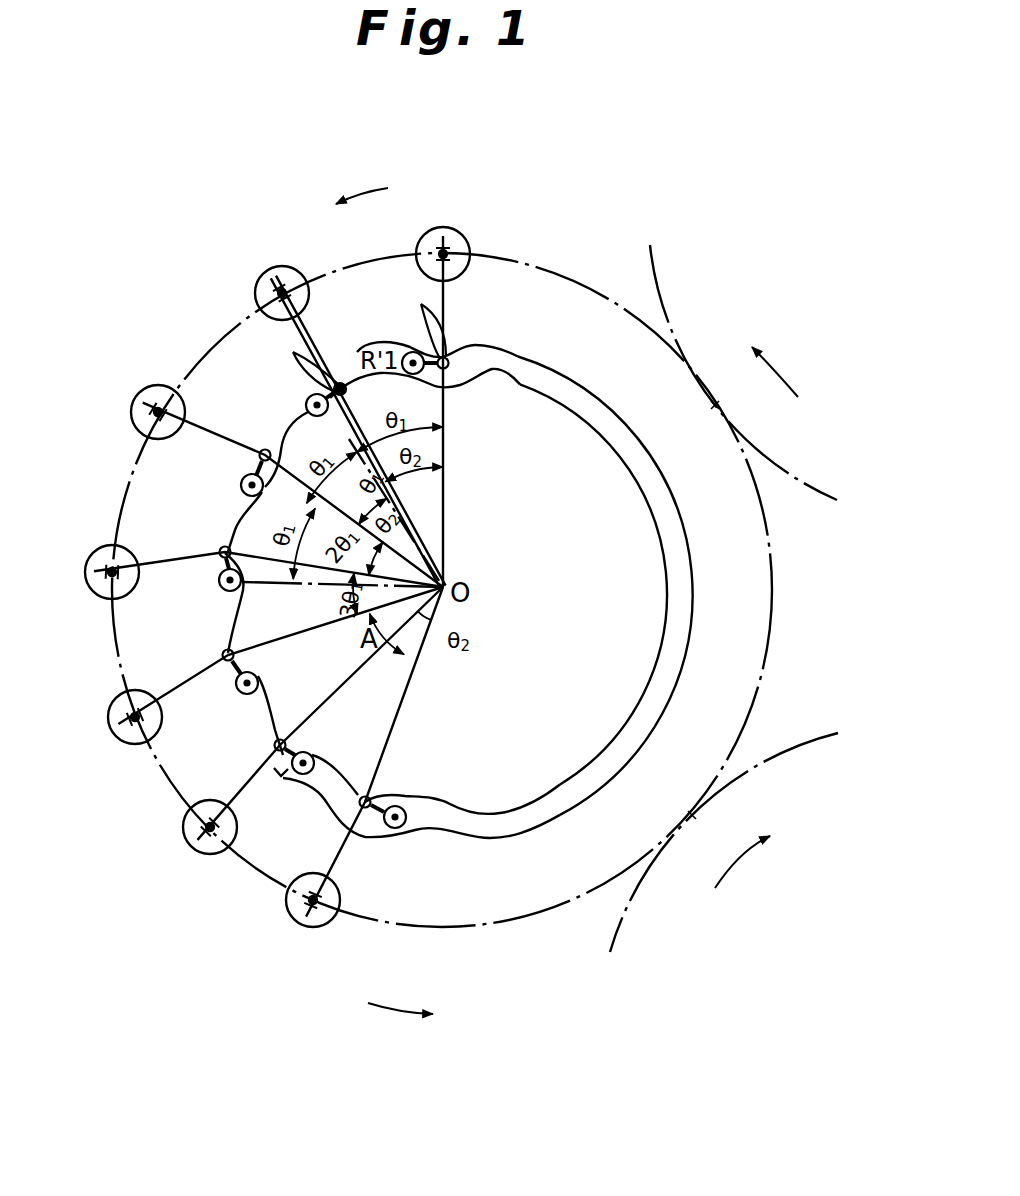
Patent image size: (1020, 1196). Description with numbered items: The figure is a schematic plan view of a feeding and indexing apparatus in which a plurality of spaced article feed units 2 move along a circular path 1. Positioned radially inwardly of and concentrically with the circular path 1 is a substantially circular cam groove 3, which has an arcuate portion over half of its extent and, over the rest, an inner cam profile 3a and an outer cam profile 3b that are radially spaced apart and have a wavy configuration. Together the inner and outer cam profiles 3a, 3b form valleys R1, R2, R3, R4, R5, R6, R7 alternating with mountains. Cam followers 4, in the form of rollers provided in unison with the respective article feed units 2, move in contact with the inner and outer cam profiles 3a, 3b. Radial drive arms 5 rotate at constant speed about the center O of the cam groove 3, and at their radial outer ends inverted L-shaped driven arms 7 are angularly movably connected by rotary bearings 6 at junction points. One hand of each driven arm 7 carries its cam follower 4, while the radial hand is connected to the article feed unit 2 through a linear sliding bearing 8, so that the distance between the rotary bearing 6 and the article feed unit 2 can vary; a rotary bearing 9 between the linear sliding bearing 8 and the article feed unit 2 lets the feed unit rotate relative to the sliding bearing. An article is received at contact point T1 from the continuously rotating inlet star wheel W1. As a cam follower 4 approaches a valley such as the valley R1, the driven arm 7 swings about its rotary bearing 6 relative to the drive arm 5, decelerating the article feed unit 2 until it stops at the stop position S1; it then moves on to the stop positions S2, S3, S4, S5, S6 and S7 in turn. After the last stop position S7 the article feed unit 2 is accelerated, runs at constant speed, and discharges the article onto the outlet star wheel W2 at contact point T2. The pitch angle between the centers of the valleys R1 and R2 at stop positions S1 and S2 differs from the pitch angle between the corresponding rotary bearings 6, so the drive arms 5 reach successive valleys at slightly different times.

The circular path 1 is at (190, 358).
The article feed unit 2 is at (470, 251).
The cam groove 3 is at (591, 529).
The inner cam profile 3a is at (490, 370).
The outer cam profile 3b is at (505, 352).
The cam follower 4 is at (408, 352).
The drive arm 5 is at (260, 587).
The rotary bearing 6 is at (449, 358).
The driven arm 7 is at (360, 336).
The linear sliding bearing 8 is at (452, 258).
The rotary bearing 9 is at (451, 251).
The stop position S1 is at (443, 381).
The stop position S2 is at (340, 410).
The stop position S3 is at (265, 477).
The stop position S4 is at (240, 572).
The stop position S5 is at (262, 687).
The stop position S6 is at (268, 850).
The stop position S7 is at (418, 903).
The valley R1 is at (466, 406).
The valley R2 is at (325, 421).
The valley R3 is at (266, 491).
The valley R4 is at (248, 589).
The valley R5 is at (267, 681).
The valley R6 is at (320, 753).
The valley R7 is at (406, 799).
The contact point T1 is at (735, 405).
The contact point T2 is at (709, 832).
The inlet star wheel W1 is at (745, 404).
The outlet star wheel W2 is at (728, 842).